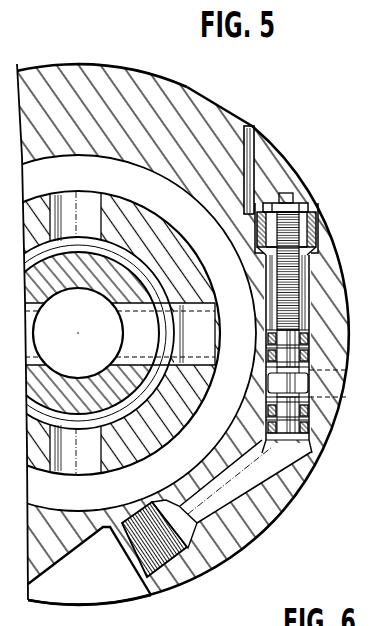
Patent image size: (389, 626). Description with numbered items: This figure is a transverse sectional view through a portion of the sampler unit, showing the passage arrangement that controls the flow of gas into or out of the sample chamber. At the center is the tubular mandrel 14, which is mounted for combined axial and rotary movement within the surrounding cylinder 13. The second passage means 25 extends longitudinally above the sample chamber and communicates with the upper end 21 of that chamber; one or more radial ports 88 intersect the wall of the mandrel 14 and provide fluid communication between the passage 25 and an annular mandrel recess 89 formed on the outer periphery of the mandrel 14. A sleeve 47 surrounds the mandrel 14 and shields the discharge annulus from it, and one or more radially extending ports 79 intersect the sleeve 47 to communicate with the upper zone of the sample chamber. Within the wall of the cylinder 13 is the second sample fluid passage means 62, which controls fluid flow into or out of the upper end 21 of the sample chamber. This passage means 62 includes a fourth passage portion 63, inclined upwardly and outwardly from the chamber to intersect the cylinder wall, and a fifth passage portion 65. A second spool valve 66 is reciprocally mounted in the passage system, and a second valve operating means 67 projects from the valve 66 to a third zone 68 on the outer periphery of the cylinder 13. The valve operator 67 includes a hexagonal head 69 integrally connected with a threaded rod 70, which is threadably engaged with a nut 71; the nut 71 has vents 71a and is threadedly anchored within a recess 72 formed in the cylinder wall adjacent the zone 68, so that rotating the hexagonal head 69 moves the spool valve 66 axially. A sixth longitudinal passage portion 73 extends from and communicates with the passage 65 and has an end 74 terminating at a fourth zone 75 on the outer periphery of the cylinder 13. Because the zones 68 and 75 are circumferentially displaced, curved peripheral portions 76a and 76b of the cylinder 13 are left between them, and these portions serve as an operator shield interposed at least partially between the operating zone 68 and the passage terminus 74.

The cylinder 13 is at (61, 83).
The mandrel 14 is at (53, 392).
The upper end of sample chamber 21 is at (208, 235).
The second passage means 25 is at (87, 319).
The sleeve 47 is at (147, 231).
The second sample fluid passage means 62 is at (291, 140).
The fourth passage portion 63 is at (262, 387).
The fifth passage portion 65 is at (320, 312).
The second spool valve 66 is at (330, 374).
The second valve operating means 67 is at (291, 190).
The third zone 68 is at (257, 154).
The hexagonal head 69 is at (307, 207).
The threaded rod 70 is at (298, 287).
The nut 71 is at (321, 231).
The vents 71a is at (315, 241).
The recess 72 is at (254, 211).
The sixth longitudinal passage portion 73 is at (270, 464).
The end of passage 74 is at (167, 567).
The fourth zone 75 is at (71, 587).
The curved peripheral portion 76a is at (328, 435).
The curved peripheral portion 76b is at (191, 89).
The radially extending ports 79 is at (88, 204).
The radial ports 88 is at (131, 325).
The annular mandrel recess 89 is at (140, 396).